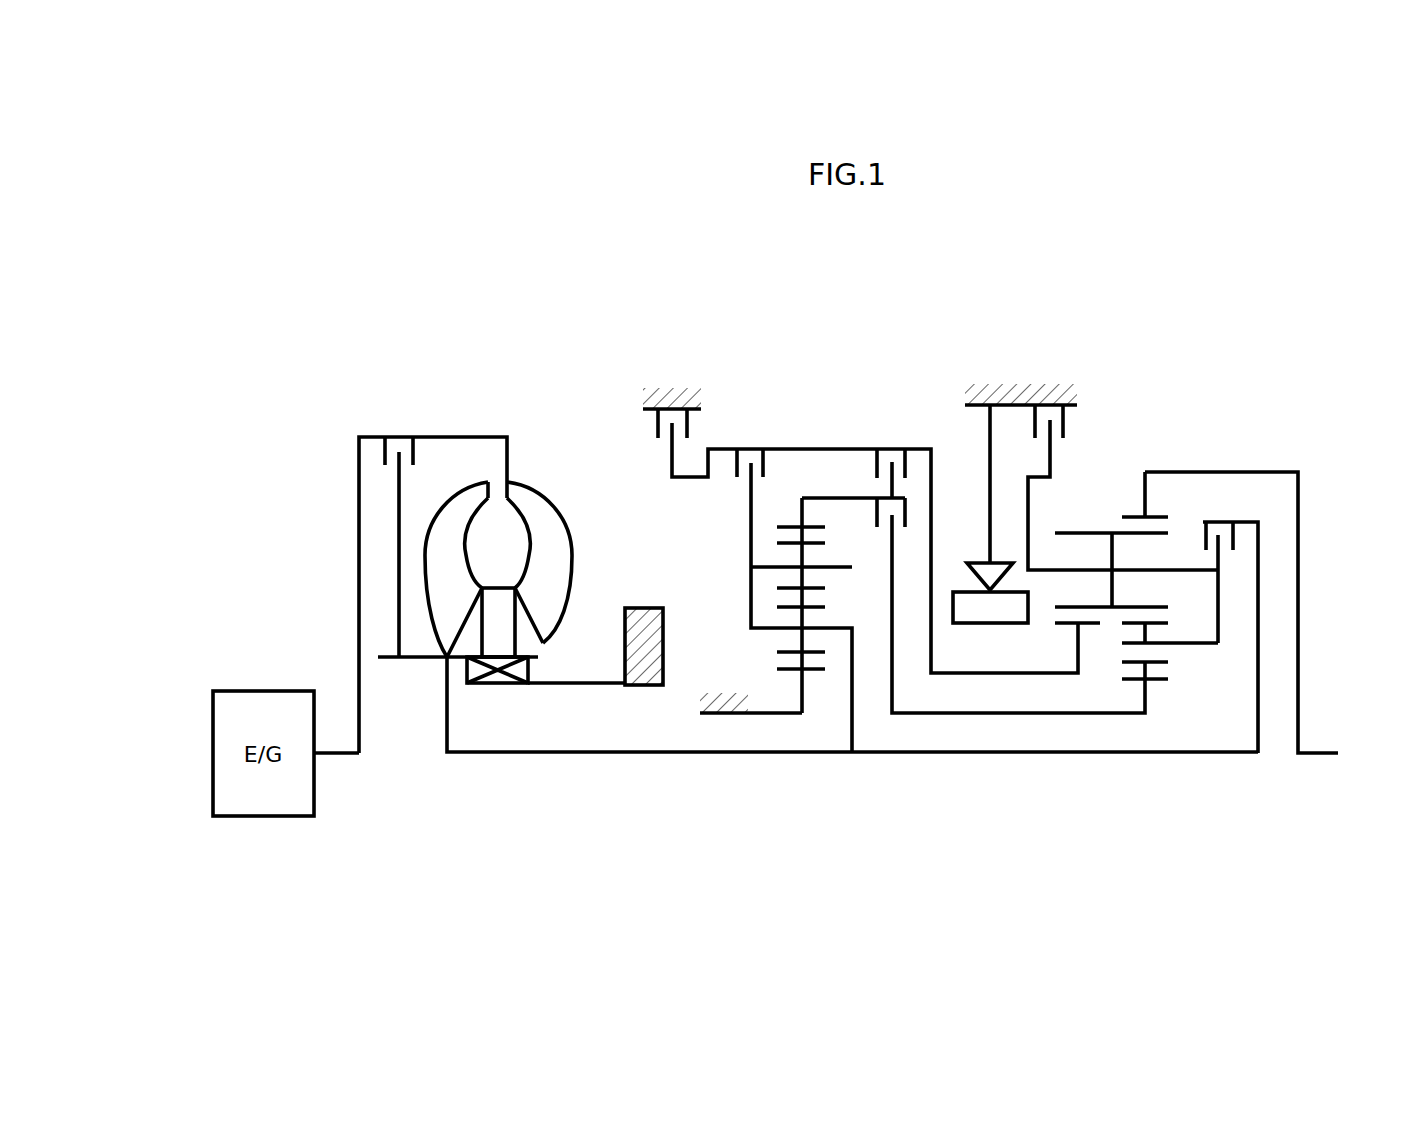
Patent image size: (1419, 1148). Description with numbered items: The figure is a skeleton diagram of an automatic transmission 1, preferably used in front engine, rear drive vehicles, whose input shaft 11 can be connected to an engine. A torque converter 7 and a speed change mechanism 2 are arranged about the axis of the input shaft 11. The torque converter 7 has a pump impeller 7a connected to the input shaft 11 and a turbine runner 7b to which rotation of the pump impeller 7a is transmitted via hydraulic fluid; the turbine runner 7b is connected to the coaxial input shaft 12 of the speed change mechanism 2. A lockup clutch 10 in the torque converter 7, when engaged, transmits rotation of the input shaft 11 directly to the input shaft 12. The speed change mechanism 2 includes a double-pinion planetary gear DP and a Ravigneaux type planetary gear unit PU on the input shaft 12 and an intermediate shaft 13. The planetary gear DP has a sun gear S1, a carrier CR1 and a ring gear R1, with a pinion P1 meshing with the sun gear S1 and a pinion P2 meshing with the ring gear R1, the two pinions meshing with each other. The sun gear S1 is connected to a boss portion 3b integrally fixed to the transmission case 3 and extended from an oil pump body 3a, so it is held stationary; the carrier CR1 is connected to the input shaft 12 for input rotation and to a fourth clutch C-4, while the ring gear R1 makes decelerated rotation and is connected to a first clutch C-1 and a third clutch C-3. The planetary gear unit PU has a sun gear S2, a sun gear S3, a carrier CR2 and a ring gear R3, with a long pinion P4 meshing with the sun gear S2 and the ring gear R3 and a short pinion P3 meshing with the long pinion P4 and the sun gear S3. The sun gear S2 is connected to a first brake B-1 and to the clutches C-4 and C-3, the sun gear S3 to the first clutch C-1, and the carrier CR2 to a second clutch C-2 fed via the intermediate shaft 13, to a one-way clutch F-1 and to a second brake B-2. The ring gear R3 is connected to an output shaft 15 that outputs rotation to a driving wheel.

The automatic transmission 1 is at (829, 343).
The speed change mechanism 2 is at (903, 386).
The transmission case 3 is at (698, 393).
The oil pump body 3a is at (643, 613).
The boss portion 3b is at (700, 702).
The torque converter 7 is at (497, 536).
The pump impeller 7a is at (530, 501).
The turbine runner 7b is at (465, 501).
The lockup clutch 10 is at (396, 434).
The input shaft 11 is at (337, 755).
The input shaft 12 is at (570, 752).
The intermediate shaft 13 is at (1035, 752).
The output shaft 15 is at (1318, 752).
The first brake B-1 is at (864, 516).
The second brake B-2 is at (1123, 465).
The first clutch C-1 is at (853, 500).
The second clutch C-2 is at (1229, 624).
The third clutch C-3 is at (1009, 567).
The fourth clutch C-4 is at (749, 449).
The one-way clutch F-1 is at (990, 529).
The planetary gear DP is at (772, 578).
The planetary gear unit PU is at (1213, 591).
The carrier CR1 is at (751, 543).
The carrier CR2 is at (1218, 600).
The ring gear R1 is at (797, 527).
The ring gear R3 is at (1133, 513).
The sun gear S1 is at (812, 670).
The sun gear S2 is at (1090, 627).
The sun gear S3 is at (1157, 685).
The pinion P1 is at (793, 650).
The pinion P2 is at (812, 548).
The short pinion P3 is at (1160, 653).
The long pinion P4 is at (1127, 537).